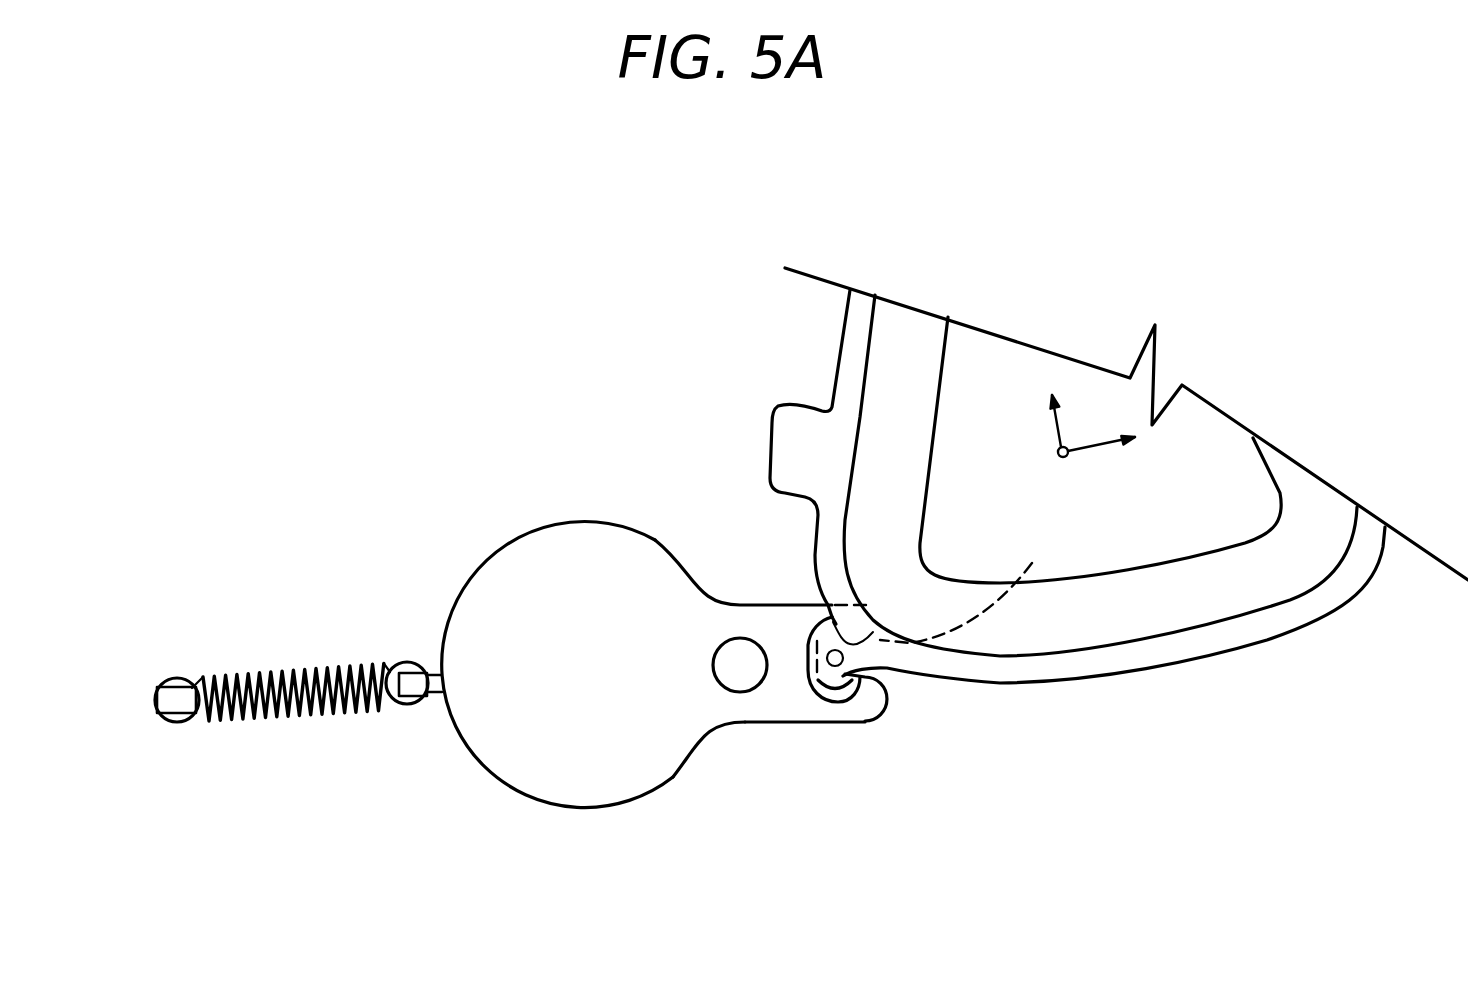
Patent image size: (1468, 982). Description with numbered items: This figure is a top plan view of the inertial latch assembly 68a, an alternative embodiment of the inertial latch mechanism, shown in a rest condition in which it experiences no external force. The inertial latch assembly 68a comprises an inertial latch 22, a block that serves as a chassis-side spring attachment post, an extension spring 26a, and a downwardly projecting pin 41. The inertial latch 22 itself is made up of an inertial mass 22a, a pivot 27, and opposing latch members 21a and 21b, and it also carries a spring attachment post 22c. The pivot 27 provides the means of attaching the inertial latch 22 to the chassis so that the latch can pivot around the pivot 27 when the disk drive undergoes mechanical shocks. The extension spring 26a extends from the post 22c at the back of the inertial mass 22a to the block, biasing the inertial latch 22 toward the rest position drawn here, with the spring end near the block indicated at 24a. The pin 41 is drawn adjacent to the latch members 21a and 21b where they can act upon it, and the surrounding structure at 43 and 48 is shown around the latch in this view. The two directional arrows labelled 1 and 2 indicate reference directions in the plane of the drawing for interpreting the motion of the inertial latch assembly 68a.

The first direction axis 1 is at (1110, 441).
The second direction axis 2 is at (1048, 413).
The latch member 21a is at (947, 605).
The latch member 21b is at (883, 703).
The inertial latch 22 is at (512, 537).
The inertial mass 22a is at (682, 773).
The spring attachment post 22c is at (413, 648).
The spring hooking portion of frame 24a is at (179, 648).
The extension spring 26a is at (283, 646).
The pivot 27 is at (761, 694).
The downwardly projecting pin 41 is at (830, 622).
The bracket 43 is at (1237, 653).
The pivot pin 48 is at (843, 674).
The inertial latch assembly 68a is at (505, 857).